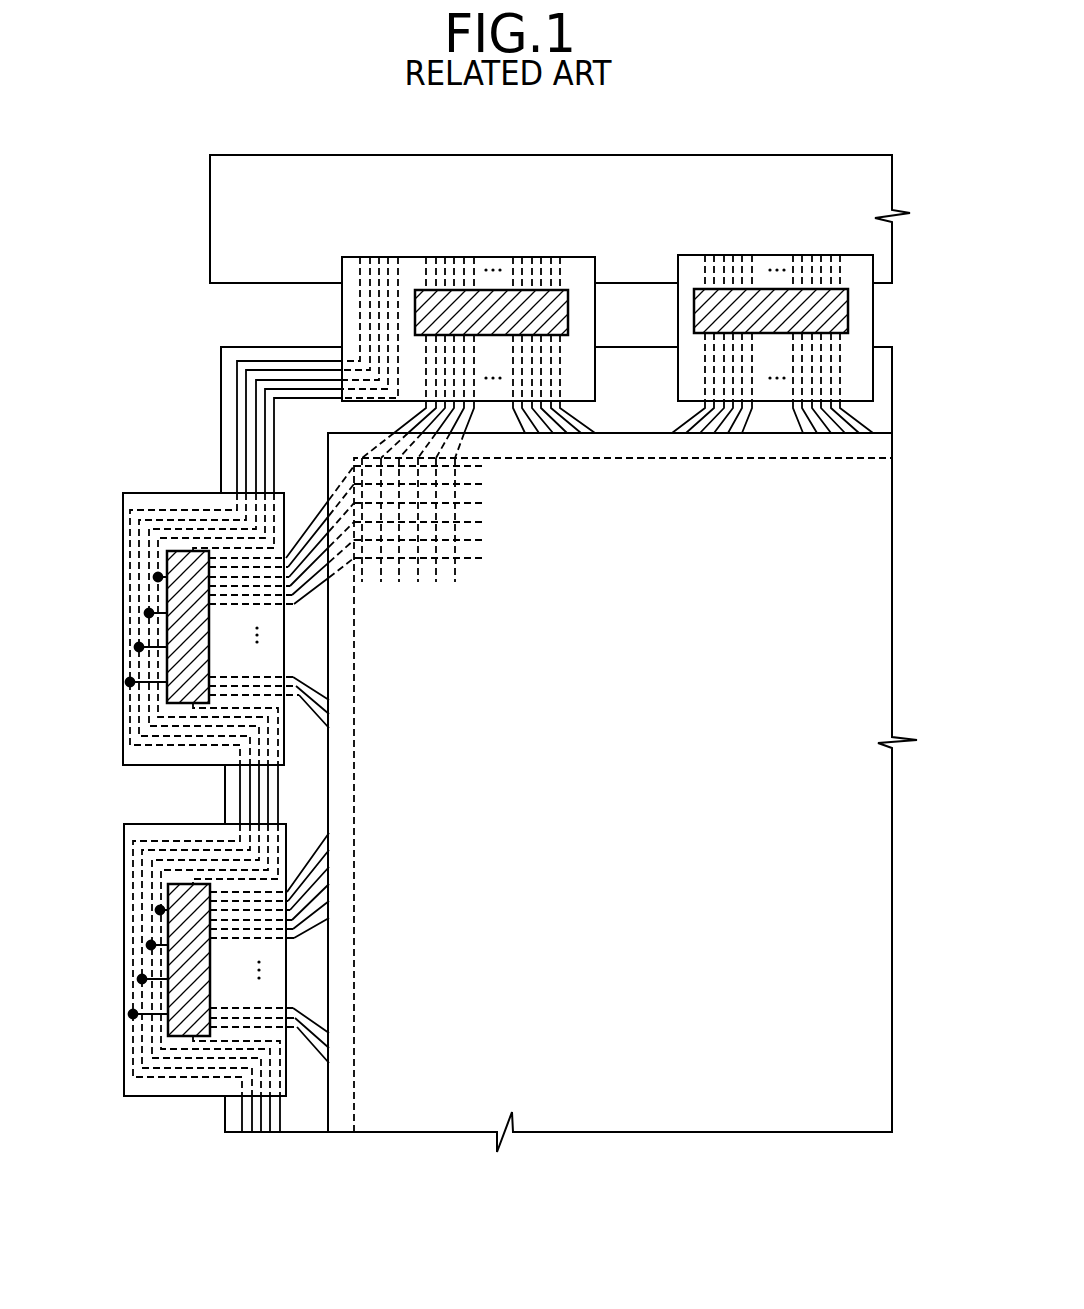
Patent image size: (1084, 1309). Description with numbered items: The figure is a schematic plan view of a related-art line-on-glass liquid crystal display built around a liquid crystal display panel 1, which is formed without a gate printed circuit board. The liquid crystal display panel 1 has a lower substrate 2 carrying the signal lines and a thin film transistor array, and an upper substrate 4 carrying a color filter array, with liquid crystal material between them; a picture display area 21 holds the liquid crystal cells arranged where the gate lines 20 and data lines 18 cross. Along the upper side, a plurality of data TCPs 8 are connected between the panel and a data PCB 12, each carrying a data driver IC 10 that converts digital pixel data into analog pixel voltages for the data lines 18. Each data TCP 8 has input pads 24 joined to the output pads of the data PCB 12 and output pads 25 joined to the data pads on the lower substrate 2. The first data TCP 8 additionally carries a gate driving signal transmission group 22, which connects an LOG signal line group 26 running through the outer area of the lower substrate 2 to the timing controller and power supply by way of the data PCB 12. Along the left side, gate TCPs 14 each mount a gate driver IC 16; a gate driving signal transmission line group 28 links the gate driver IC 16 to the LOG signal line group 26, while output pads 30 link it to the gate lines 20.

The liquid crystal display panel 1 is at (907, 625).
The lower substrate 2 is at (893, 390).
The upper substrate 4 is at (892, 447).
The data TCP 8 is at (868, 338).
The data driver IC 10 is at (848, 305).
The data PCB 12 is at (884, 194).
The gate TCP 14 is at (123, 632).
The gate driver IC 16 is at (146, 613).
The data lines 18 is at (418, 578).
The gate lines 20 is at (478, 522).
The picture display area 21 is at (669, 783).
The gate driving signal transmission group 22 is at (349, 298).
The input pads 24 is at (531, 289).
The output pads 25 is at (562, 383).
The LOG signal line group 26 is at (228, 387).
The gate driving signal transmission line group 28 is at (117, 567).
The output pads 30 is at (279, 565).